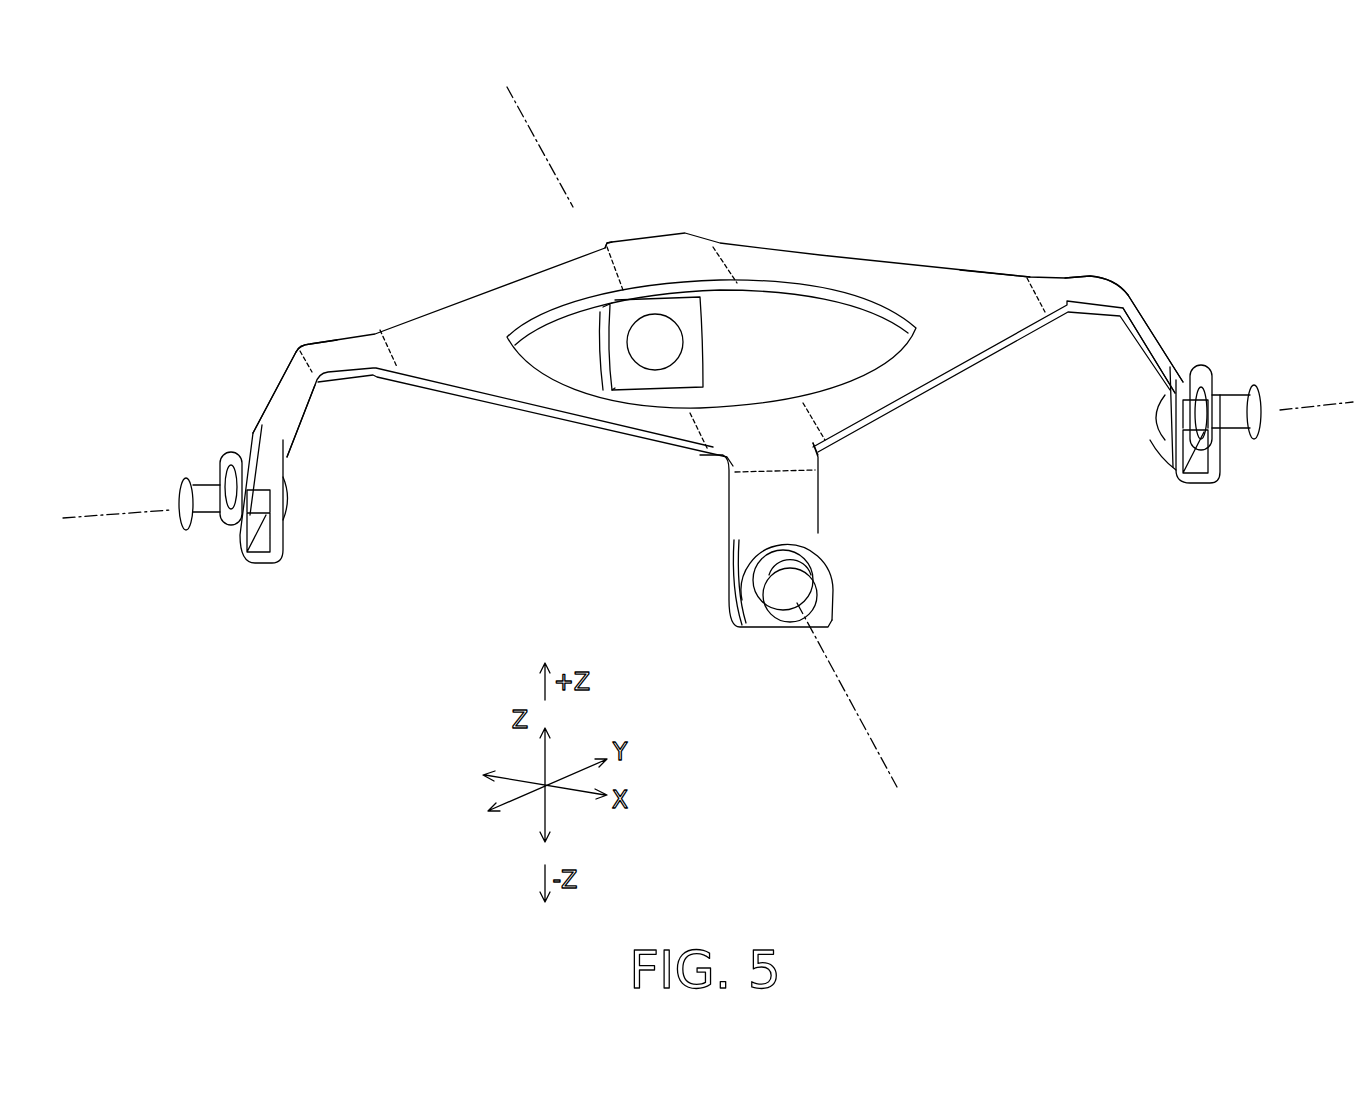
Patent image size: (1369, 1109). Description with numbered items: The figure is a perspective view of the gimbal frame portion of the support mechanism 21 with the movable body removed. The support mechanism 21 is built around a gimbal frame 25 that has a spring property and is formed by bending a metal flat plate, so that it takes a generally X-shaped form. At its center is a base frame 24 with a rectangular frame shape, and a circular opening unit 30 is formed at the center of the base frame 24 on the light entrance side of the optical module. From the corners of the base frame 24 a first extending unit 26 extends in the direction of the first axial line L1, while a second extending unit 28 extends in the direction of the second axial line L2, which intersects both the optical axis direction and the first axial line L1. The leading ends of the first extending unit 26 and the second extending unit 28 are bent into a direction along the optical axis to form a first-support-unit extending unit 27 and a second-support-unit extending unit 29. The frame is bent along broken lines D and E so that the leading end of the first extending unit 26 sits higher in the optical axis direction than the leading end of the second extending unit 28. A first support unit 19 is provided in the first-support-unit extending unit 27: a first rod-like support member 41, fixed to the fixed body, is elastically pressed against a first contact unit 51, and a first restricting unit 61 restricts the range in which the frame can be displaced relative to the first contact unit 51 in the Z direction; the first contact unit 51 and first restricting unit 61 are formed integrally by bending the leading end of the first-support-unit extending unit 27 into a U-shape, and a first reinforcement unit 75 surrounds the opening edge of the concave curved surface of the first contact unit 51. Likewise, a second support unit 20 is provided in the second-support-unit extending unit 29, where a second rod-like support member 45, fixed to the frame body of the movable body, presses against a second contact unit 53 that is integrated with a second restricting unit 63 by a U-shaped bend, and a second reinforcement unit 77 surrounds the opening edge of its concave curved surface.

The first support unit 19 is at (245, 578).
The second support unit 20 is at (712, 328).
The support mechanism 21 is at (1048, 166).
The base frame 24 is at (935, 305).
The gimbal frame 25 is at (1015, 233).
The first extending unit 26 is at (337, 343).
The first-support-unit extending unit 27 is at (297, 415).
The second extending unit 28 is at (600, 247).
The second-support-unit extending unit 29 is at (618, 312).
The opening unit 30 is at (770, 298).
The first rod-like support member 41 is at (210, 487).
The second rod-like support member 45 is at (782, 603).
The first contact unit 51 is at (290, 492).
The second contact unit 53 is at (660, 350).
The first restricting unit 61 is at (232, 453).
The second restricting unit 63 is at (743, 545).
The first reinforcement unit 75 is at (283, 512).
The second reinforcement unit 77 is at (610, 307).
The broken line D is at (732, 267).
The broken line E is at (393, 330).
The first axial line L1 is at (97, 517).
The second axial line L2 is at (877, 753).